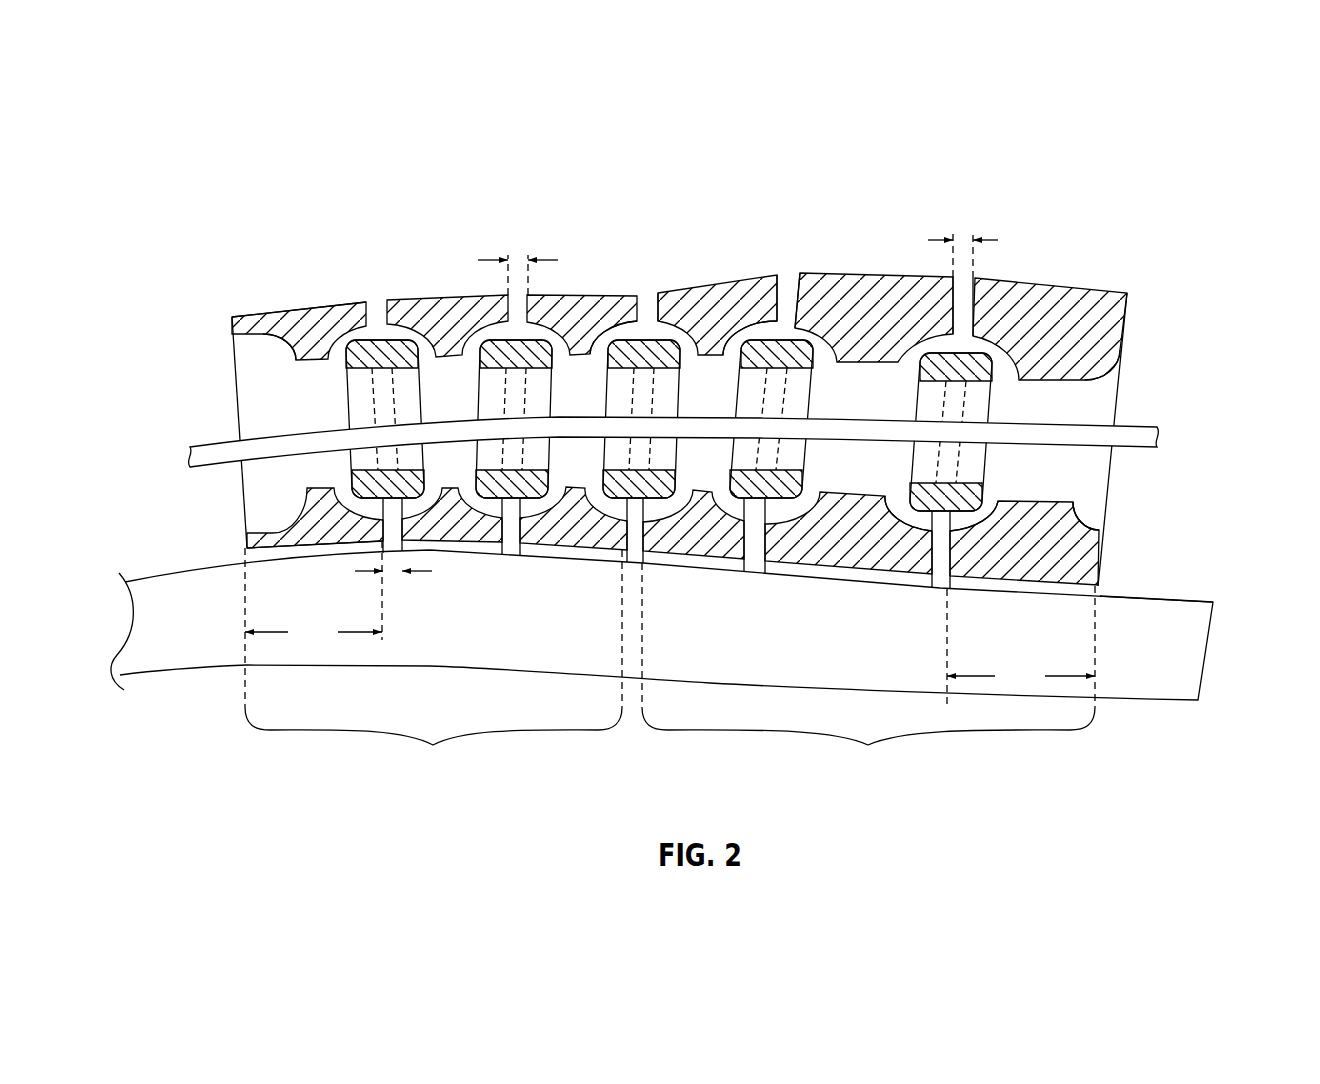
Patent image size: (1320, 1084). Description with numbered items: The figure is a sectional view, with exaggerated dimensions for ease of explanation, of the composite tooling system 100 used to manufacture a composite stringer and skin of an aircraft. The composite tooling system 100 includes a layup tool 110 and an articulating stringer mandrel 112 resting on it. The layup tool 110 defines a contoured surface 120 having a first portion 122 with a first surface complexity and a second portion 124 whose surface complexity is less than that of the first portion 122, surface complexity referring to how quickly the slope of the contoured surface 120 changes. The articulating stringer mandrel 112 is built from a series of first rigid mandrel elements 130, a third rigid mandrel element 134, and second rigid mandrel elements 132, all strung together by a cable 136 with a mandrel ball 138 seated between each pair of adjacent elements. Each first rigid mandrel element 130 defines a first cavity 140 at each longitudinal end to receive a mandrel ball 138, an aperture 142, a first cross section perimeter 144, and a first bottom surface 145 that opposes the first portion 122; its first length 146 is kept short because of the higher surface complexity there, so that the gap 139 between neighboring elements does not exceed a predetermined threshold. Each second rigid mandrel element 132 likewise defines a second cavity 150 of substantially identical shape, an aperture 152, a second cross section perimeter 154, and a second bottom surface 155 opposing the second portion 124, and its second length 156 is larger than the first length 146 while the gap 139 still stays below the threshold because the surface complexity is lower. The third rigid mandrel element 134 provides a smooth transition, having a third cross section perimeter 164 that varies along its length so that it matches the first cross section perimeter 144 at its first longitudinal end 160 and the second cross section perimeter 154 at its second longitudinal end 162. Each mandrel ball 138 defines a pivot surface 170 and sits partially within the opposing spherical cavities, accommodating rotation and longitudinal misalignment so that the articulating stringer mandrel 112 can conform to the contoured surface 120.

The composite tooling system 100 is at (1148, 160).
The layup tool 110 is at (1206, 650).
The articulating stringer mandrel 112 is at (1188, 375).
The contoured surface 120 is at (1209, 595).
The first portion 122 is at (433, 664).
The second portion 124 is at (868, 670).
The first rigid mandrel element 130 is at (260, 312).
The second rigid mandrel element 132 is at (880, 273).
The third rigid mandrel element 134 is at (740, 278).
The cable 136 is at (1146, 432).
The mandrel ball 138 is at (348, 410).
The gap 139 is at (500, 258).
The first cavity 140 is at (262, 338).
The aperture 142 is at (336, 488).
The first cross section perimeter 144 is at (323, 303).
The first bottom surface 145 is at (280, 552).
The first length 146 is at (313, 624).
The second cavity 150 is at (1118, 360).
The aperture 152 is at (1074, 502).
The second cross section perimeter 154 is at (960, 300).
The second bottom surface 155 is at (1060, 586).
The second length 156 is at (1021, 646).
The first longitudinal end 160 is at (659, 298).
The second longitudinal end 162 is at (782, 295).
The third cross section perimeter 164 is at (712, 572).
The pivot surface 170 is at (992, 493).